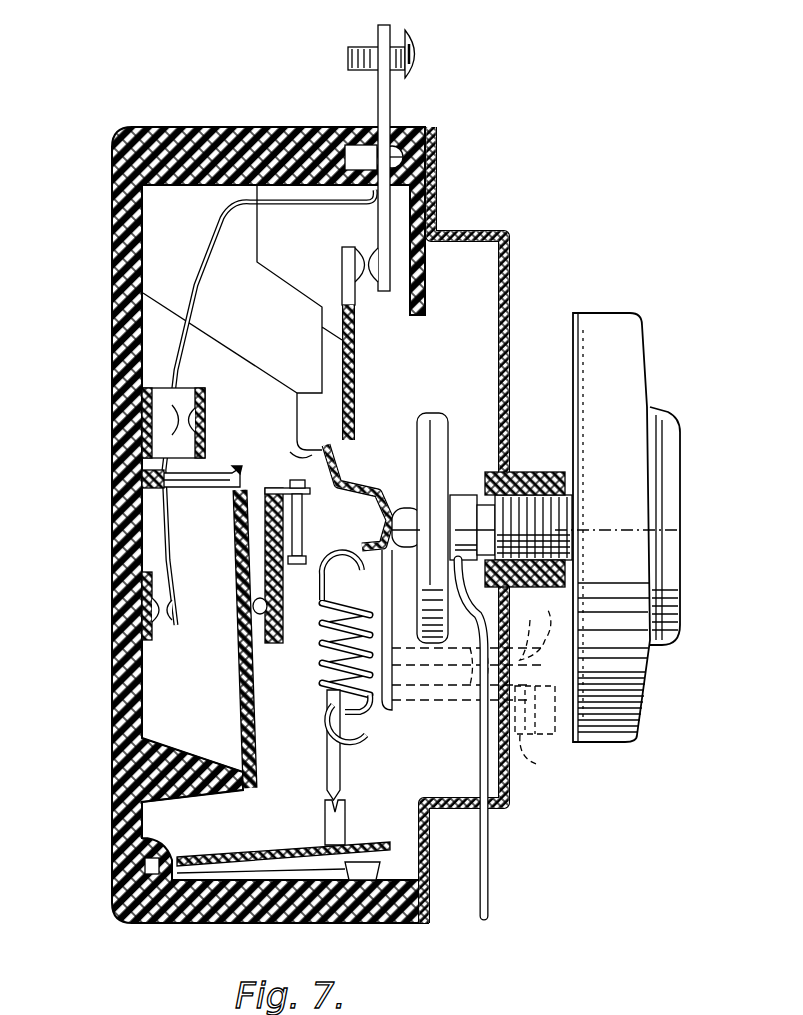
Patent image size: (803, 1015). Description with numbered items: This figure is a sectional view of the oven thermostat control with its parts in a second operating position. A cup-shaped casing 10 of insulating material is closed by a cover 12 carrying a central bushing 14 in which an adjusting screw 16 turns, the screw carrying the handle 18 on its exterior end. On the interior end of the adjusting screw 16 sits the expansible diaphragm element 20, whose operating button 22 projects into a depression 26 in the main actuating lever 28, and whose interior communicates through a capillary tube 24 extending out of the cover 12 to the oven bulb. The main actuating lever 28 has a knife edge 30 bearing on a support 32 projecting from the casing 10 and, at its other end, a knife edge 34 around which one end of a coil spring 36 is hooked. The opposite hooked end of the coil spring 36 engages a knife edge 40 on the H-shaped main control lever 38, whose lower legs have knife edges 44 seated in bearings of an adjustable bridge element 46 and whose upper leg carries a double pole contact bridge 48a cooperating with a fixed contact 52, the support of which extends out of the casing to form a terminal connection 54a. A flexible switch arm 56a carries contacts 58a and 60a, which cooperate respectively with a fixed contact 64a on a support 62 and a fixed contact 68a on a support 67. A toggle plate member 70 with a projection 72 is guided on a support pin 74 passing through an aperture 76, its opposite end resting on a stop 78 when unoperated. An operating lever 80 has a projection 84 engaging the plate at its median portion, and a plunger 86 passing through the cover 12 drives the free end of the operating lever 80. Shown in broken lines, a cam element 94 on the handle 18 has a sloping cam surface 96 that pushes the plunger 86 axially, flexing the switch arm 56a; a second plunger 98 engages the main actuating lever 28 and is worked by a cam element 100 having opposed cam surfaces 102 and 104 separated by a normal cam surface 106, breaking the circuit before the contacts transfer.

The casing 10 is at (122, 152).
The cover 12 is at (510, 245).
The bushing 14 is at (520, 472).
The adjusting screw 16 is at (535, 500).
The handle 18 is at (598, 327).
The diaphragm element 20 is at (441, 415).
The operating button 22 is at (405, 508).
The capillary tube 24 is at (489, 838).
The depression 26 is at (382, 555).
The main actuating lever 28 is at (368, 497).
The knife edge 30 is at (322, 440).
The support 32 is at (290, 288).
The knife edge 34 is at (333, 735).
The coil spring 36 is at (318, 706).
The main control lever 38 is at (328, 773).
The knife edge 40 is at (330, 590).
The knife edge 44 is at (328, 795).
The adjustable bridge element 46 is at (286, 860).
The double pole contact bridge 48a is at (348, 250).
The fixed contact 52 is at (370, 283).
The terminal connection 54a is at (390, 98).
The flexible switch arm 56a is at (190, 286).
The contact 58a is at (178, 405).
The contact 60a is at (170, 620).
The support 62 is at (112, 462).
The fixed contact 64a is at (205, 400).
The support 67 is at (112, 650).
The fixed contact 68a is at (168, 632).
The toggle plate member 70 is at (242, 692).
The projection 72 is at (213, 489).
The support pin 74 is at (168, 483).
The aperture 76 is at (237, 468).
The stop 78 is at (202, 782).
The operating lever 80 is at (283, 640).
The projection 84 is at (254, 600).
The plunger 86 is at (290, 452).
The cam element 94 is at (572, 745).
The cam surface 96 is at (530, 722).
The plunger 98 is at (522, 650).
The cam element 100 is at (578, 622).
The cam surface 102 is at (578, 590).
The cam surface 104 is at (578, 666).
The cam surface 106 is at (578, 645).